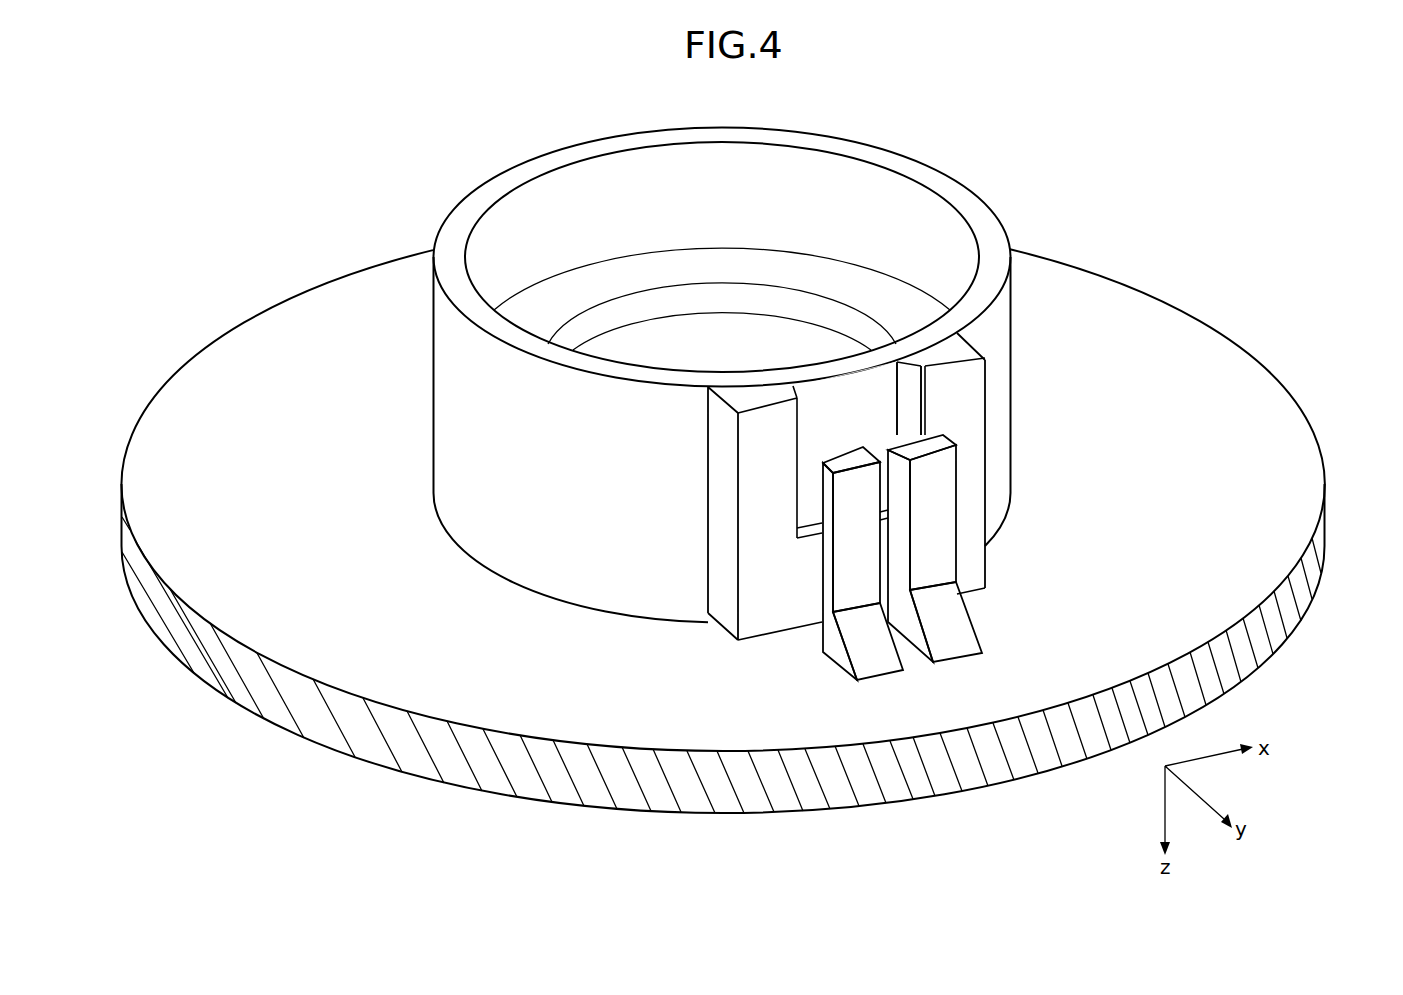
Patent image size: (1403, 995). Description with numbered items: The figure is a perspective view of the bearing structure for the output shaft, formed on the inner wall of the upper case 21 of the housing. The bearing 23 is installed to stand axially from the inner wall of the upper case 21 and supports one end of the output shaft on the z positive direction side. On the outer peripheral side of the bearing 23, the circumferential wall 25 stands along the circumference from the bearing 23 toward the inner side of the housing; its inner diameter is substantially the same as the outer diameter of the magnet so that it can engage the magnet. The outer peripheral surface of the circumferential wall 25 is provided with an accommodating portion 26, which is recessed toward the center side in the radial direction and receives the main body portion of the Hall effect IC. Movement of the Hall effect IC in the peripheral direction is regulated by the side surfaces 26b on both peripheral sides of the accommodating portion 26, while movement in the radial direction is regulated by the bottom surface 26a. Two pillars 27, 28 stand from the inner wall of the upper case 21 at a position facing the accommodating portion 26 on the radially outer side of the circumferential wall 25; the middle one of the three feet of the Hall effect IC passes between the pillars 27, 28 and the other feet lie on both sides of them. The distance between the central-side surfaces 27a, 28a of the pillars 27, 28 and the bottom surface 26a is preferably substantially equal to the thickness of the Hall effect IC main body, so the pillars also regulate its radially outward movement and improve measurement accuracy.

The upper case 21 is at (1285, 452).
The bearing 23 is at (734, 332).
The circumferential wall 25 is at (953, 174).
The accommodating portion 26 is at (887, 486).
The bottom surface 26a is at (820, 443).
The side surface 26b is at (912, 390).
The pillar 27 is at (846, 551).
The surface on the central side of the pillar 27a is at (856, 447).
The pillar 28 is at (970, 527).
The surface on the central side of the pillar 28a is at (912, 433).